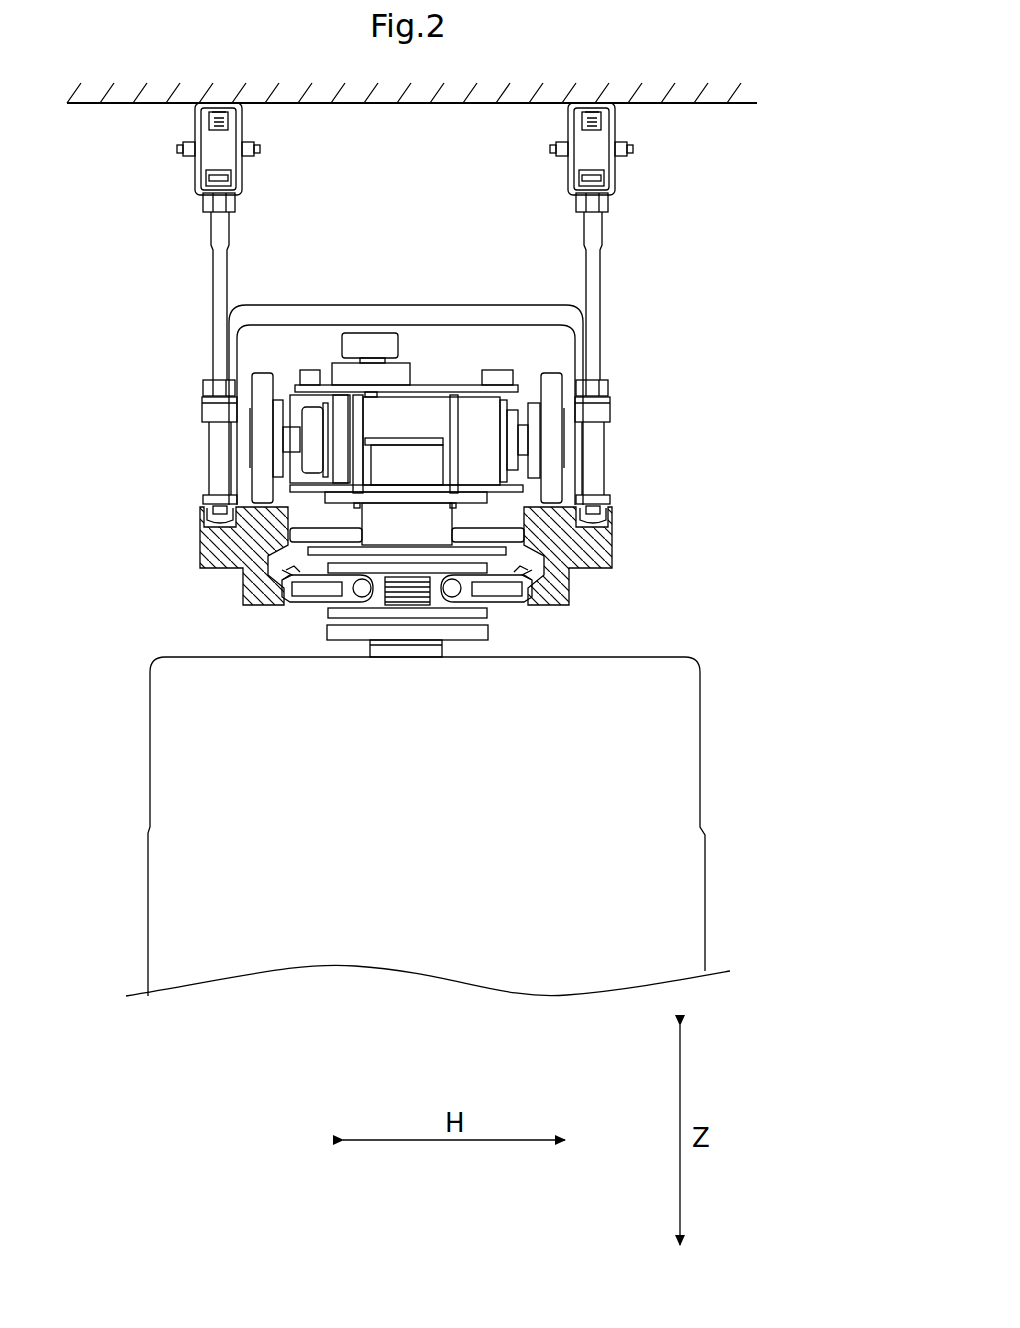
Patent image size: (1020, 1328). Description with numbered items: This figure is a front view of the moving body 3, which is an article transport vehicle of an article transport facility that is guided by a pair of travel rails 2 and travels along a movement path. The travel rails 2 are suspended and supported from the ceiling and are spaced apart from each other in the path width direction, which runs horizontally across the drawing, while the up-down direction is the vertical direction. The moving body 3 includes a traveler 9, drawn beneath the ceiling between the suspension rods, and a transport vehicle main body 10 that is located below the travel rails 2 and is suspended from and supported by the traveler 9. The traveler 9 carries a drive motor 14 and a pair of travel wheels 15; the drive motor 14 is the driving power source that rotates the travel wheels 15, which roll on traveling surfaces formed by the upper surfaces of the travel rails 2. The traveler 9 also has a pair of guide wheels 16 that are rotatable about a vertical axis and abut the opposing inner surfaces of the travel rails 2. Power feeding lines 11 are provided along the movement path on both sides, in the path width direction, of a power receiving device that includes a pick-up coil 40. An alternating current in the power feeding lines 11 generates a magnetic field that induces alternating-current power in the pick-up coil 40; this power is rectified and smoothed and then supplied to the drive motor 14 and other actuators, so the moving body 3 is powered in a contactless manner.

The travel rail 2 is at (200, 535).
The moving body 3 is at (464, 376).
The traveler 9 is at (437, 358).
The transport vehicle main body 10 is at (682, 875).
The power feeding line 11 is at (322, 596).
The drive motor 14 is at (290, 405).
The travel wheel 15 is at (260, 443).
The guide wheel 16 is at (298, 533).
The pick-up coil 40 is at (423, 598).